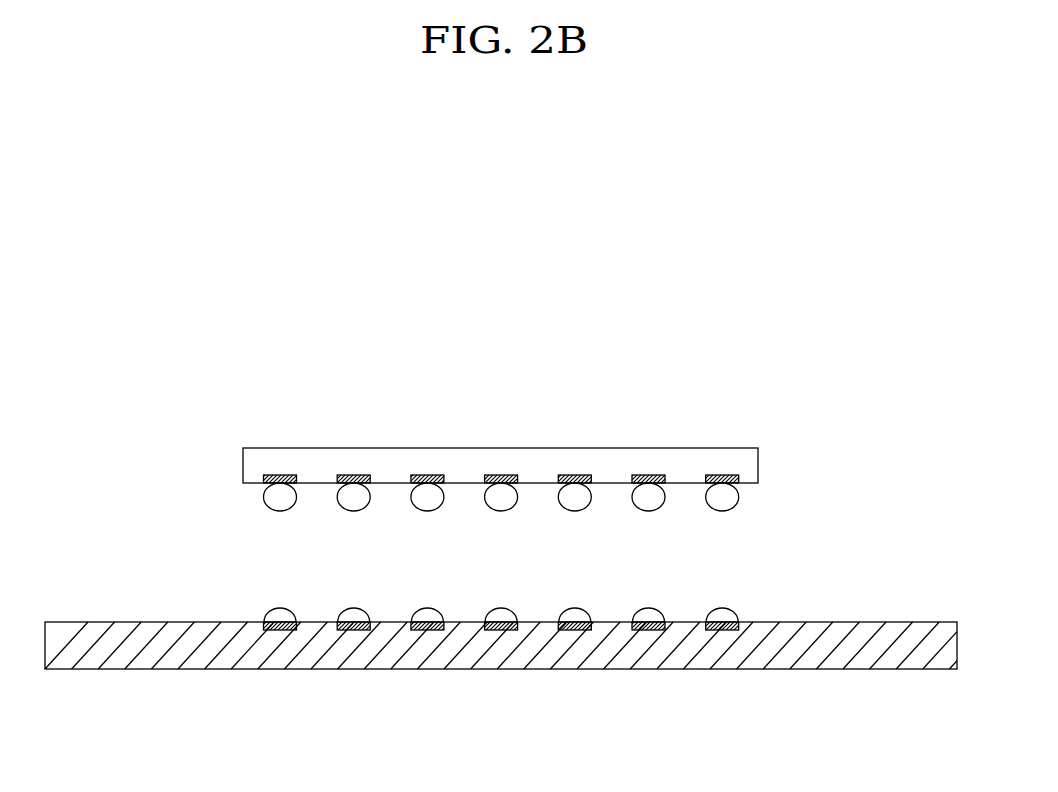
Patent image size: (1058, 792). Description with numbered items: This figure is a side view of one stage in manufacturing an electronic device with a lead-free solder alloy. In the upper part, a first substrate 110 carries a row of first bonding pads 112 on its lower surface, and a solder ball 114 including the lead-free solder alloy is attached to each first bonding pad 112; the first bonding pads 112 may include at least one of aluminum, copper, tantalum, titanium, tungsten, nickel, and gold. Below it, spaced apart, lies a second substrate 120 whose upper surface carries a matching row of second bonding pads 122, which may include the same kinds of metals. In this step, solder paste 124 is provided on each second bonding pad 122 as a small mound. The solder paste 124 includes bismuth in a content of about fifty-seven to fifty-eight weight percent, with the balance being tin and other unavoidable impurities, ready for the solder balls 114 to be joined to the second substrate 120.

The first substrate 110 is at (750, 462).
The first bonding pads 112 is at (738, 480).
The solder balls 114 is at (727, 497).
The second substrate 120 is at (837, 658).
The second bonding pads 122 is at (722, 630).
The solder paste 124 is at (732, 617).